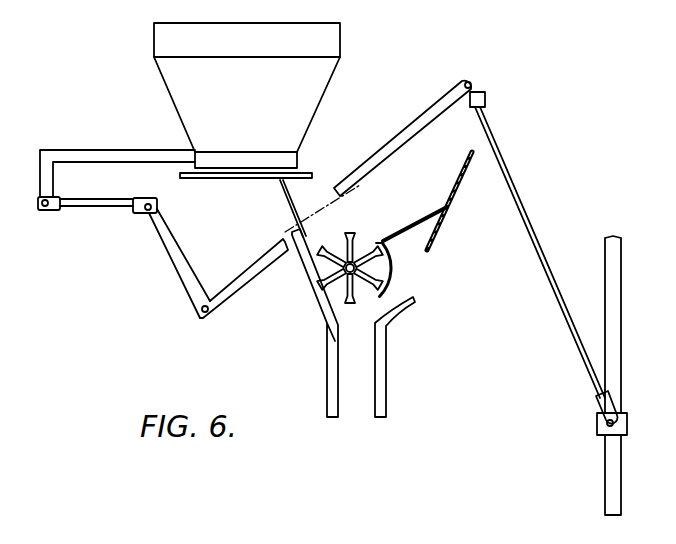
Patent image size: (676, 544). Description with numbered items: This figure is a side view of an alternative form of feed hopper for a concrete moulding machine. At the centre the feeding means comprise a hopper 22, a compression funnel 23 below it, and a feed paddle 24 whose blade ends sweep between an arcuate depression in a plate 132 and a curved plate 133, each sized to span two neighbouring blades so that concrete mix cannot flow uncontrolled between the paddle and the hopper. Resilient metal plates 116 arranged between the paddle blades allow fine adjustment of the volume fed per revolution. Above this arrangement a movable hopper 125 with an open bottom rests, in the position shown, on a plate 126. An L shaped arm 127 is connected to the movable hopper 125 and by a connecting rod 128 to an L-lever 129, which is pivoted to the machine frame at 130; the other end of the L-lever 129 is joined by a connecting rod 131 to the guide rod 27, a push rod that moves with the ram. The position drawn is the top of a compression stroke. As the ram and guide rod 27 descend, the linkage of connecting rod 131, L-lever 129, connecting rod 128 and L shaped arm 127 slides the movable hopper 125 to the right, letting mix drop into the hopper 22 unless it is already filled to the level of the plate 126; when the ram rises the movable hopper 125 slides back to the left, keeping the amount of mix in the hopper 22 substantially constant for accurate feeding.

The hopper 22 is at (441, 195).
The compression funnel 23 is at (393, 313).
The feed paddle 24 is at (364, 230).
The guide rod 27 is at (613, 330).
The resilient metal plates 116 is at (360, 250).
The movable hopper 125 is at (310, 82).
The plate 126 is at (306, 178).
The L shaped arm 127 is at (80, 153).
The connecting rod 128 is at (90, 200).
The L-lever 129 is at (186, 268).
The pivot 130 is at (205, 314).
The connecting rod 131 is at (508, 173).
The plate 132 is at (323, 303).
The curved plate 133 is at (392, 273).